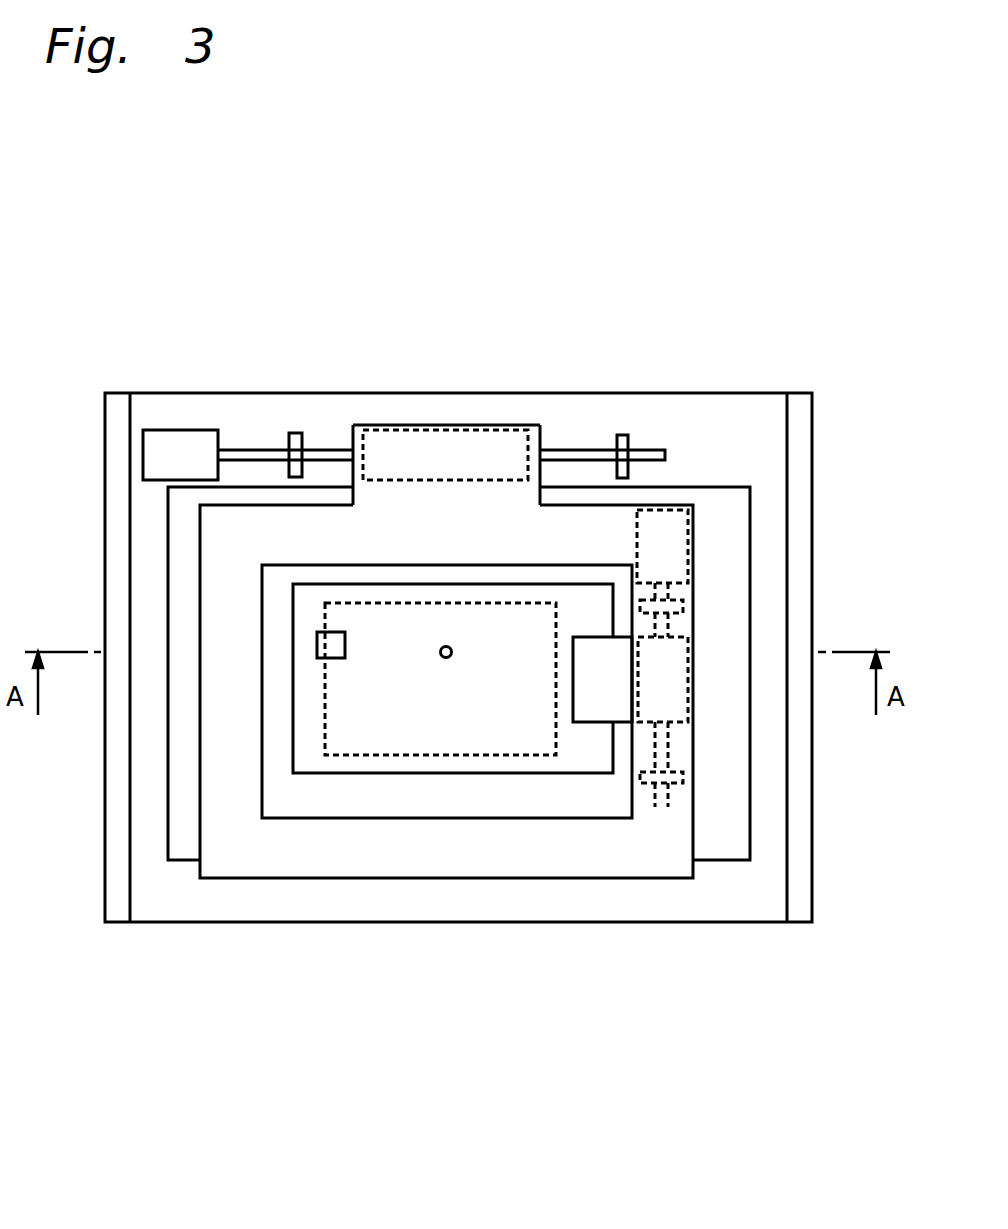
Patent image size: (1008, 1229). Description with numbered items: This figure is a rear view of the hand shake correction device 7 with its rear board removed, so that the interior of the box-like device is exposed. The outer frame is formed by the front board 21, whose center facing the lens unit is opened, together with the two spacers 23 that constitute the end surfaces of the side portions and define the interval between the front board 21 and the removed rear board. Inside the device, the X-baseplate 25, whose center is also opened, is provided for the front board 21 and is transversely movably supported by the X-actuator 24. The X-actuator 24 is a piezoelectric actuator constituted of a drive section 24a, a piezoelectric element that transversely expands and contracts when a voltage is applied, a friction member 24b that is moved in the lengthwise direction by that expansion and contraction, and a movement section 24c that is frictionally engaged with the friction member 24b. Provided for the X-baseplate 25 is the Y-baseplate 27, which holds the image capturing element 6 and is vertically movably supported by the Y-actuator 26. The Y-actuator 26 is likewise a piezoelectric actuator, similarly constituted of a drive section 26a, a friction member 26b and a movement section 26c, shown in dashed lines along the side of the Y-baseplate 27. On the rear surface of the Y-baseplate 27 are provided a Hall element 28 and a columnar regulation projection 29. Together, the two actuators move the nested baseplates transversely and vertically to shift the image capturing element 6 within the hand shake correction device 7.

The hand shake correction device 7 is at (141, 322).
The front board 21 is at (225, 908).
The spacers 23 is at (121, 393).
The X-actuator 24 is at (242, 415).
The drive section 24a is at (185, 430).
The friction member 24b is at (301, 433).
The movement section 24c is at (440, 428).
The X-baseplate 25 is at (392, 865).
The Y-actuator 26 is at (674, 495).
The drive section 26a is at (695, 540).
The friction member 26b is at (690, 625).
The movement section 26c is at (690, 688).
The Y-baseplate 27 is at (578, 765).
The Hall element 28 is at (332, 632).
The regulation projection 29 is at (446, 646).
The image capturing element 6 is at (417, 768).